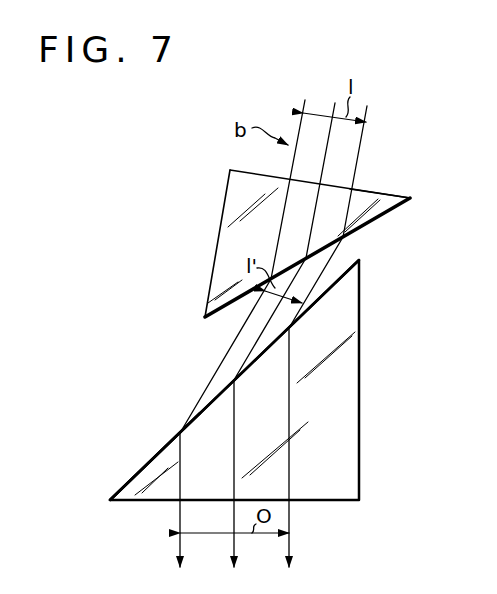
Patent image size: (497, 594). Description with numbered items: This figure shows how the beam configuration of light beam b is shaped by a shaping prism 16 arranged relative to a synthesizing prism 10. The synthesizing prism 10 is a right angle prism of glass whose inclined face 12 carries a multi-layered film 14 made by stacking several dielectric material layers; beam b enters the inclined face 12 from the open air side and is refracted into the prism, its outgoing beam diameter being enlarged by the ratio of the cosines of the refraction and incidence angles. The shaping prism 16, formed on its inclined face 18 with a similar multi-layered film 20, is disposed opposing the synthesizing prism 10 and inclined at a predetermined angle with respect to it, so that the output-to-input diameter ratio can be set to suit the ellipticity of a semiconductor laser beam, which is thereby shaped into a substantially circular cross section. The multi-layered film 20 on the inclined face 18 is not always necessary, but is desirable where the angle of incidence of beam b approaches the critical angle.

The synthesizing prism 10 is at (350, 370).
The inclined face 12 is at (312, 305).
The multi-layered film 14 is at (160, 452).
The shaping prism 16 is at (222, 243).
The inclined face 18 is at (376, 205).
The multi-layered film 20 is at (368, 223).